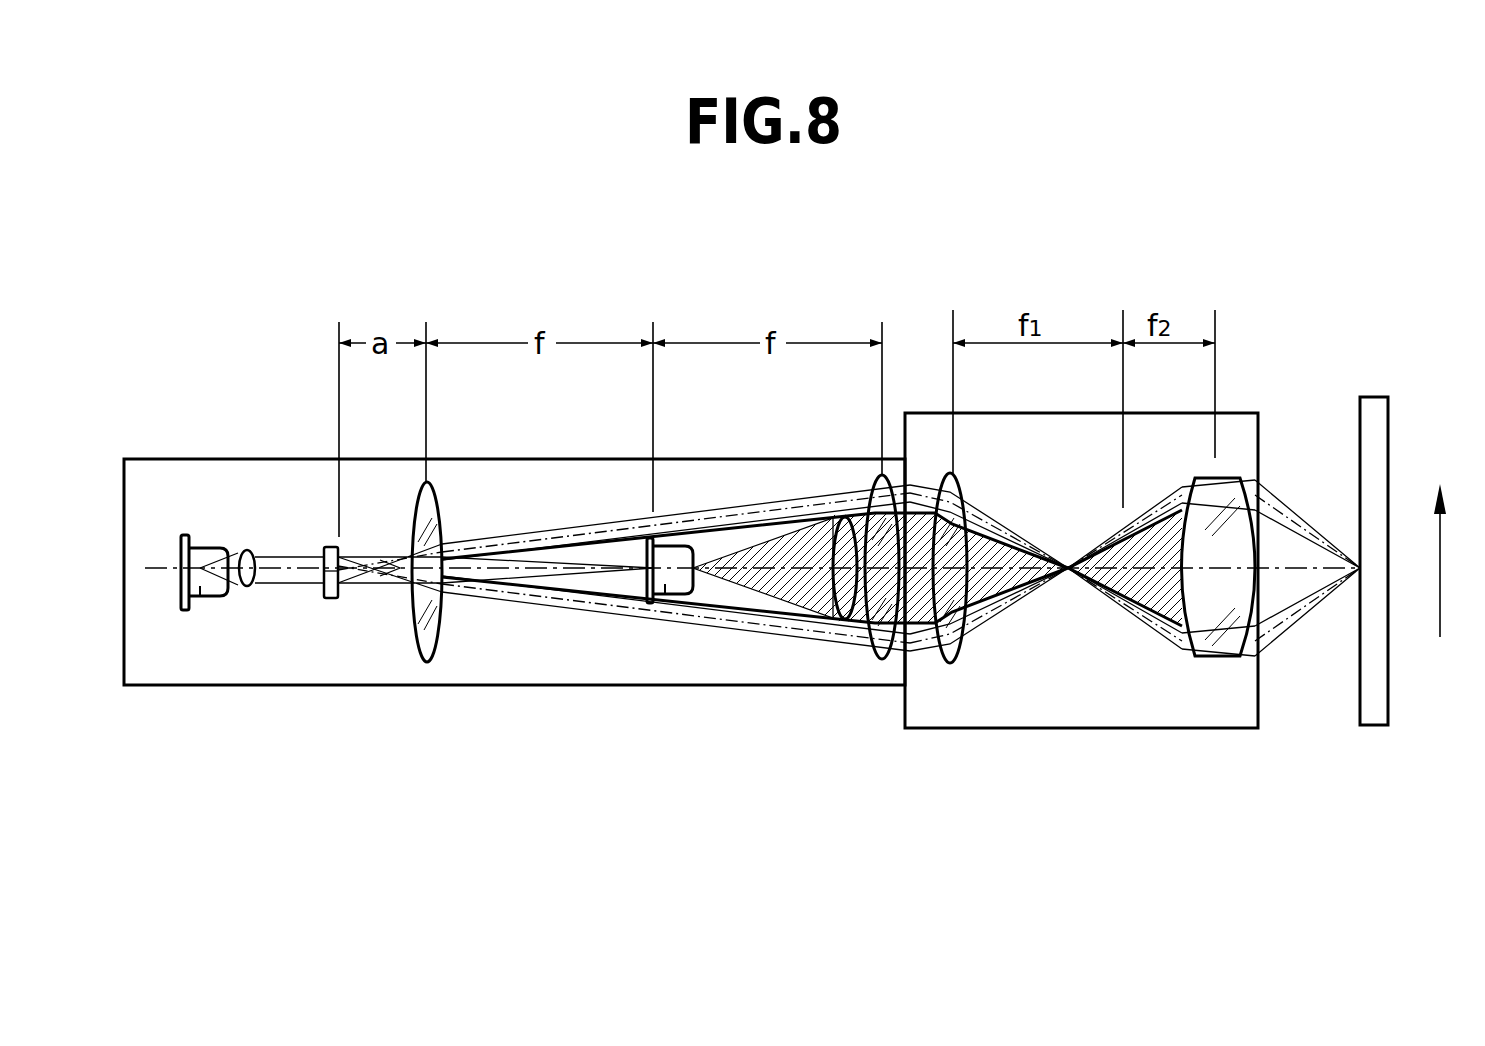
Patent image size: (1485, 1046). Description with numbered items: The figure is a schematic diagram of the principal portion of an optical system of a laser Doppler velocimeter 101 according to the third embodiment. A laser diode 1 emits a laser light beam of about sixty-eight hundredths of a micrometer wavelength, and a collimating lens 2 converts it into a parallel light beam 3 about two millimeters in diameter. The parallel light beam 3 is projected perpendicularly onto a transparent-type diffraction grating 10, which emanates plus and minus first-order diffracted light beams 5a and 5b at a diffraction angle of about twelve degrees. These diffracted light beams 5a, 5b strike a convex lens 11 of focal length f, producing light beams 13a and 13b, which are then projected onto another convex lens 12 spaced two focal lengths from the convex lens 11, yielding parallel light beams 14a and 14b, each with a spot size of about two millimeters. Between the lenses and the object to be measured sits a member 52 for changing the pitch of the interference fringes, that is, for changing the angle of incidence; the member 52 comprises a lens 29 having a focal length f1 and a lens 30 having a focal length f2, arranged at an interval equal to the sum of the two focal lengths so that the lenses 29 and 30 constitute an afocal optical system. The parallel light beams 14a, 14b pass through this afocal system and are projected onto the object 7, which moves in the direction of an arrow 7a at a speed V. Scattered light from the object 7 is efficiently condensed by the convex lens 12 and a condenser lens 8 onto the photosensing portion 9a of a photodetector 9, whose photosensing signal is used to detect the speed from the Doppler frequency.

The laser Doppler velocimeter 101 is at (176, 472).
The laser diode 1 is at (198, 612).
The collimating lens 2 is at (247, 550).
The parallel light beam 3 is at (283, 573).
The diffraction grating 10 is at (327, 600).
The diffracted light beam 5a is at (396, 550).
The diffracted light beam 5b is at (362, 585).
The convex lens 11 is at (440, 652).
The light beam 13a is at (517, 532).
The light beam 13b is at (550, 604).
The photodetector 9 is at (668, 596).
The photosensing portion 9a is at (690, 522).
The condenser lens 8 is at (836, 612).
The convex lens 12 is at (868, 657).
The parallel light beam 14a is at (908, 490).
The parallel light beam 14b is at (898, 650).
The lens 29 is at (952, 662).
The member for changing the pitch of interference fringes 52 is at (1115, 712).
The lens 30 is at (1222, 646).
The object 7 is at (1367, 713).
The arrow 7a is at (1442, 640).